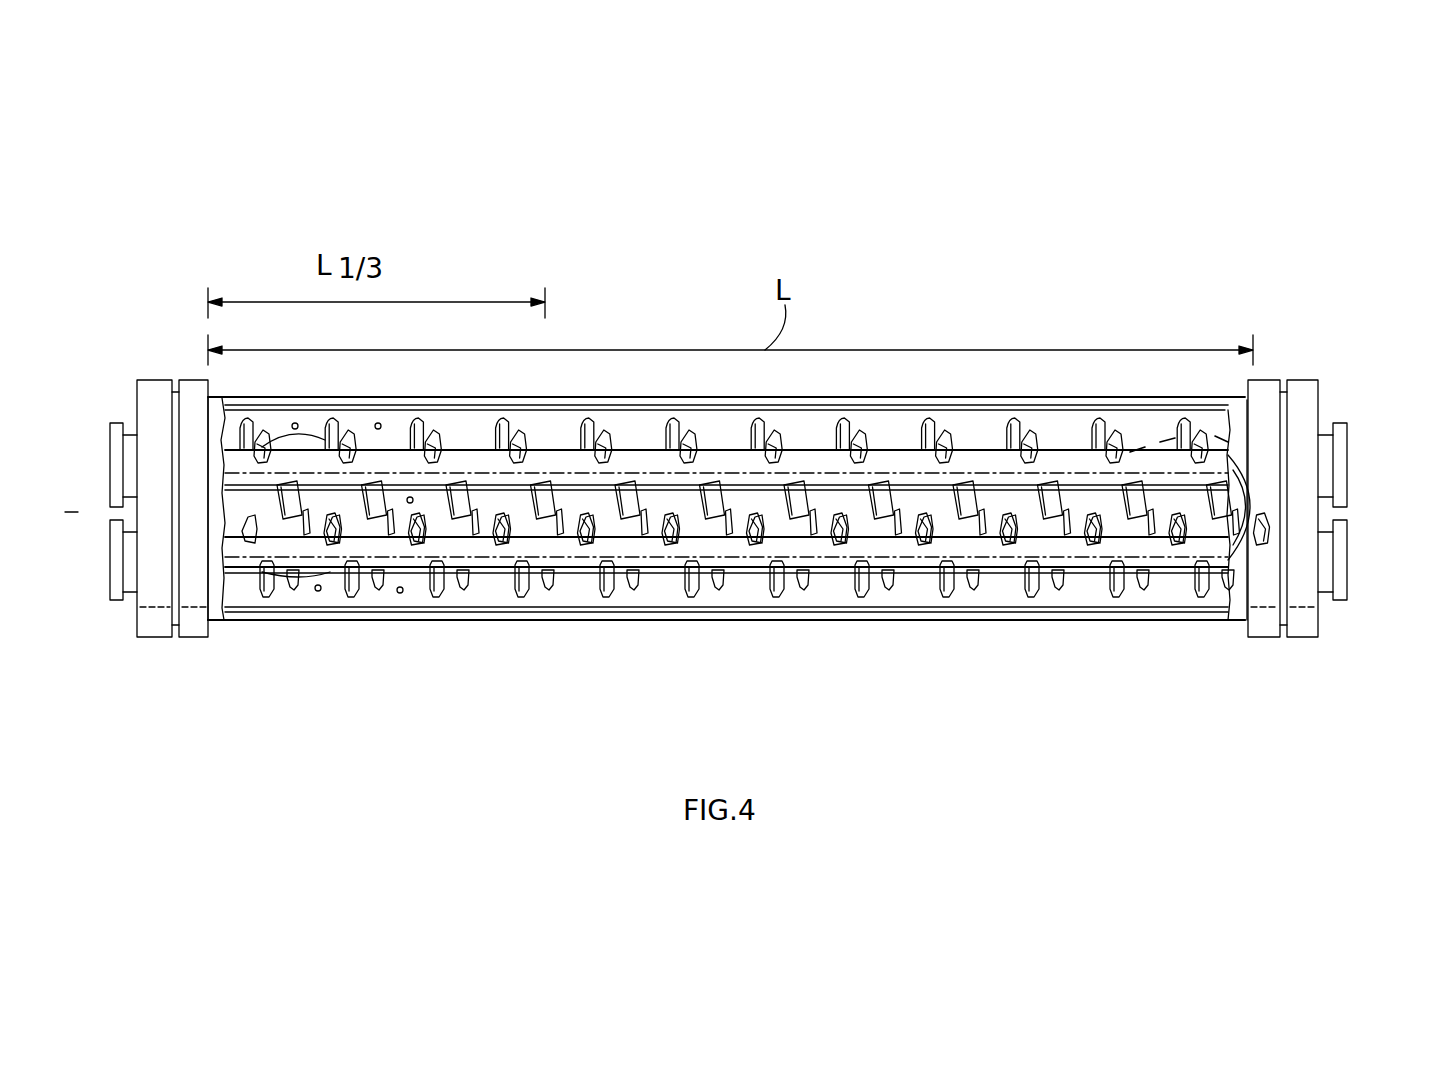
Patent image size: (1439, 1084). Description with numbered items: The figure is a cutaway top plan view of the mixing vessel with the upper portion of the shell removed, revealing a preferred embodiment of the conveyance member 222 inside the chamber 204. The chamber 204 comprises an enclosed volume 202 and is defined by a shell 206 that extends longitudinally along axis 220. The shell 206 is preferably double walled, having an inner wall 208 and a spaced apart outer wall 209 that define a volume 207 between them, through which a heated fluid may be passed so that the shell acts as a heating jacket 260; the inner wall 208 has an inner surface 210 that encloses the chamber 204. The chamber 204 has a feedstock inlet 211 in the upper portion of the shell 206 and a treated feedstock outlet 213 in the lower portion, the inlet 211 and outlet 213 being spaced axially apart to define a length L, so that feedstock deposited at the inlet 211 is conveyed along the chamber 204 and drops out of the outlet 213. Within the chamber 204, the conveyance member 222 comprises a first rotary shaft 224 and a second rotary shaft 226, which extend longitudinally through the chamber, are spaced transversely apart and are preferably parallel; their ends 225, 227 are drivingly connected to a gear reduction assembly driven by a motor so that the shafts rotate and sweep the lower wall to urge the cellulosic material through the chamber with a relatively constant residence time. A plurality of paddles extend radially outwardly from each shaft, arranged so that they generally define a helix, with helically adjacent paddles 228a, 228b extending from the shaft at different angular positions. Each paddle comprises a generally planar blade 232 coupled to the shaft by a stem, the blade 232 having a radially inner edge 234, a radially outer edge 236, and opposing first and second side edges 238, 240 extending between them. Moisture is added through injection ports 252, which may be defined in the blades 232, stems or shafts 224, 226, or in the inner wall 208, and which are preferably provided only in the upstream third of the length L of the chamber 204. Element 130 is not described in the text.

The cutting tool 130 is at (596, 410).
The enclosed volume 202 is at (705, 425).
The chamber 204 is at (1083, 597).
The shell 206 is at (333, 627).
The volume 207 is at (808, 610).
The inner wall 208 is at (533, 608).
The outer wall 209 is at (730, 625).
The inner surface 210 is at (1000, 598).
The feedstock inlet 211 is at (280, 580).
The treated feedstock outlet 213 is at (1210, 395).
The axis 220 is at (1325, 511).
The conveyance member 222 is at (658, 580).
The first rotary shaft 224 is at (978, 455).
The end 225 is at (112, 610).
The second rotary shaft 226 is at (918, 565).
The end 227 is at (125, 498).
The paddle 228a is at (528, 438).
The paddle 228b is at (548, 490).
The blade 232 is at (1012, 430).
The radially inner edge 234 is at (1122, 530).
The radially outer edge 236 is at (1125, 492).
The first side edge 238 is at (1102, 520).
The second side edge 240 is at (1140, 535).
The injection port 252 is at (400, 593).
The heating jacket 260 is at (1123, 627).